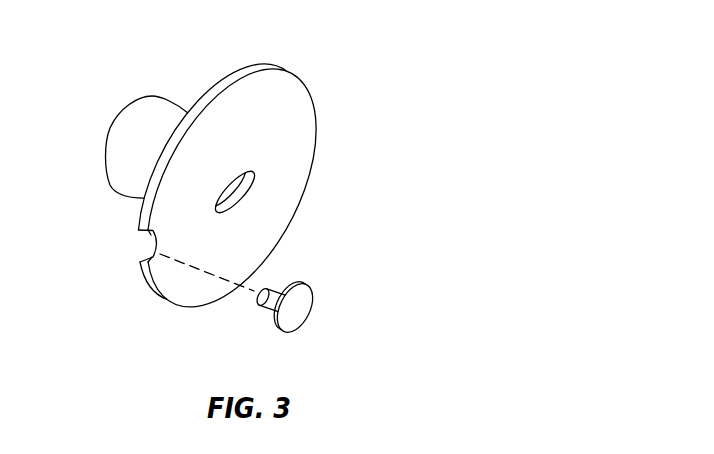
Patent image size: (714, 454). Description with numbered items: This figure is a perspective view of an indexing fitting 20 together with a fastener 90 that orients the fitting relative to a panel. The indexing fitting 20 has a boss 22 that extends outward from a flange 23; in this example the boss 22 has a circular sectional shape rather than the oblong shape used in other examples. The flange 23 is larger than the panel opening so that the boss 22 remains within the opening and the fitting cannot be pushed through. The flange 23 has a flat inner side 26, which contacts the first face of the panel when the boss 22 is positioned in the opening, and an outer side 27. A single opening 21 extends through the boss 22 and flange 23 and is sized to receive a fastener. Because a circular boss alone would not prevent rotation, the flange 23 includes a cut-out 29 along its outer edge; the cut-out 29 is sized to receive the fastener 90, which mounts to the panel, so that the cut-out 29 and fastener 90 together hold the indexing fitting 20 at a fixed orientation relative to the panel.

The indexing fitting 20 is at (339, 60).
The opening 21 is at (238, 181).
The boss 22 is at (132, 113).
The flange 23 is at (268, 170).
The inner side 26 is at (232, 73).
The outer side 27 is at (257, 220).
The cut-out 29 is at (127, 248).
The fastener 90 is at (293, 312).